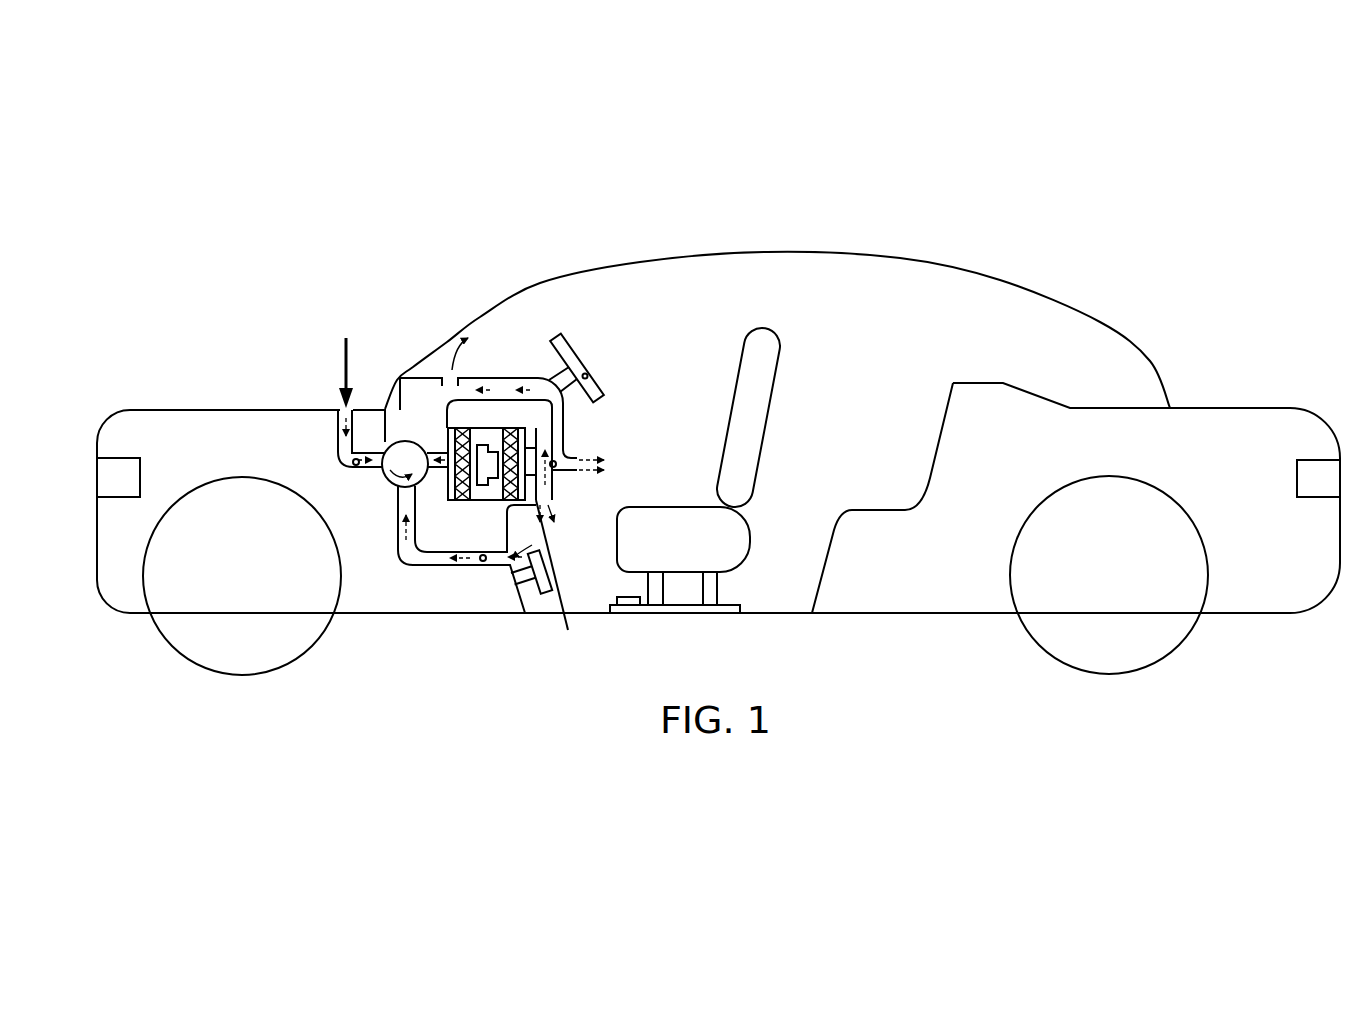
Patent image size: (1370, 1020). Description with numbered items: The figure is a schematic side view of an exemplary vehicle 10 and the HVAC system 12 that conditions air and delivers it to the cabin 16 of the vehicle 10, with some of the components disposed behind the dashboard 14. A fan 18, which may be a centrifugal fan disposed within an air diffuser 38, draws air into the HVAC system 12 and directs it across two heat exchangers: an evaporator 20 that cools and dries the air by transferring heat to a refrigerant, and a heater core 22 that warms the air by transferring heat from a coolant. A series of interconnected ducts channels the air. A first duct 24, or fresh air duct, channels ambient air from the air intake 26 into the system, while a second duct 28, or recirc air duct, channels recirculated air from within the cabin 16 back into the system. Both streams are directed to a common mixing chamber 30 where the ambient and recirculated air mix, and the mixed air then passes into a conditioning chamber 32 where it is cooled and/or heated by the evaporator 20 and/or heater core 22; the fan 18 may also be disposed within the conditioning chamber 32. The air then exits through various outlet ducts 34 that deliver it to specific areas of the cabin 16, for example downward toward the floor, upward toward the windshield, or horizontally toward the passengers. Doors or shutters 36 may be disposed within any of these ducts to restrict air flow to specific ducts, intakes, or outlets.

The vehicle 10 is at (410, 128).
The HVAC system 12 is at (398, 412).
The dashboard 14 is at (517, 379).
The cabin 16 is at (672, 345).
The fan 18 is at (457, 456).
The evaporator 20 is at (458, 480).
The heater core 22 is at (498, 483).
The first duct 24 is at (338, 452).
The air intake 26 is at (342, 407).
The second duct 28 is at (447, 567).
The mixing chamber 30 is at (393, 492).
The conditioning chamber 32 is at (436, 412).
The outlet ducts 34 is at (483, 381).
The doors or shutters 36 is at (588, 376).
The air diffuser 38 is at (448, 384).